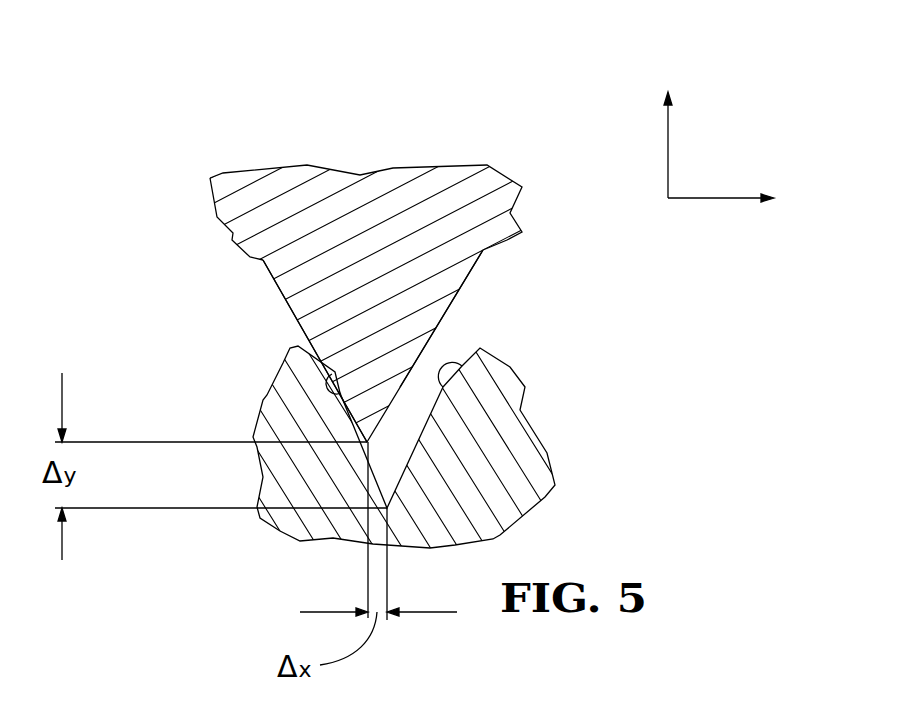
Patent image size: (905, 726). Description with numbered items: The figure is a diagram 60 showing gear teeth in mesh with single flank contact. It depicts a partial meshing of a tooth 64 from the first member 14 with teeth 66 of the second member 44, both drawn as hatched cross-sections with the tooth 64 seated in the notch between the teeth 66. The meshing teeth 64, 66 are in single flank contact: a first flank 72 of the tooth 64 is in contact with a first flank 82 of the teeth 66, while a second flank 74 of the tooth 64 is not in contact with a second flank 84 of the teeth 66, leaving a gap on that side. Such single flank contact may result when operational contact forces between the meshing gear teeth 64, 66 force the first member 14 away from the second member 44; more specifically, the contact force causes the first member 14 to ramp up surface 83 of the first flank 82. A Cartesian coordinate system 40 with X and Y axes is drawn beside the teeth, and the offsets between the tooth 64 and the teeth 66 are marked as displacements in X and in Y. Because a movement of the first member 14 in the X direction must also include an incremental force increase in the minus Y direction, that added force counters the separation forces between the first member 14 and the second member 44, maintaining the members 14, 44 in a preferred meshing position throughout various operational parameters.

The first member 14 is at (488, 242).
The Cartesian coordinate system 40 is at (703, 200).
The second member 44 is at (501, 363).
The diagram 60 is at (543, 103).
The tooth 64 is at (377, 320).
The teeth 66 is at (377, 444).
The first flank 72 is at (299, 326).
The second flank 74 is at (443, 312).
The first flank 82 is at (337, 373).
The surface 83 is at (312, 352).
The second flank 84 is at (440, 367).